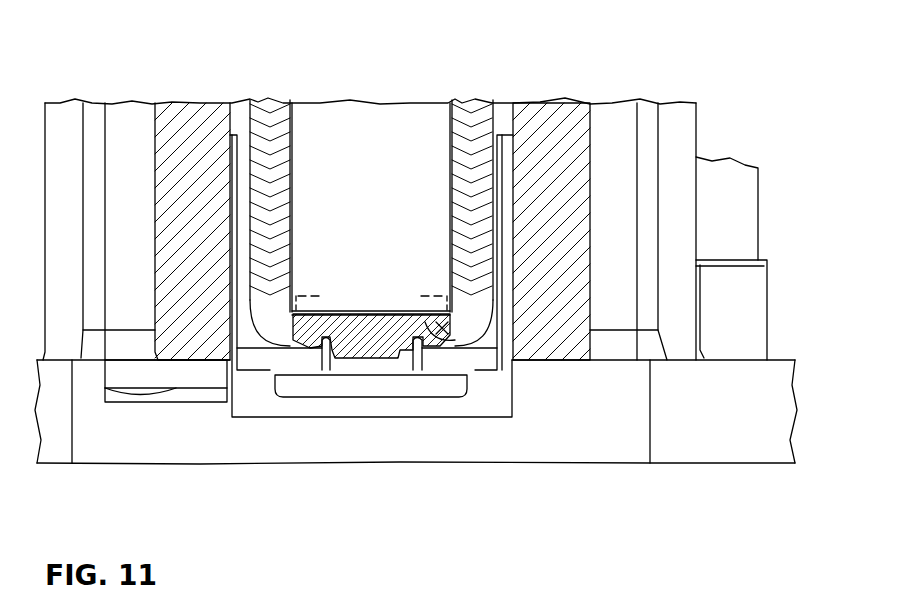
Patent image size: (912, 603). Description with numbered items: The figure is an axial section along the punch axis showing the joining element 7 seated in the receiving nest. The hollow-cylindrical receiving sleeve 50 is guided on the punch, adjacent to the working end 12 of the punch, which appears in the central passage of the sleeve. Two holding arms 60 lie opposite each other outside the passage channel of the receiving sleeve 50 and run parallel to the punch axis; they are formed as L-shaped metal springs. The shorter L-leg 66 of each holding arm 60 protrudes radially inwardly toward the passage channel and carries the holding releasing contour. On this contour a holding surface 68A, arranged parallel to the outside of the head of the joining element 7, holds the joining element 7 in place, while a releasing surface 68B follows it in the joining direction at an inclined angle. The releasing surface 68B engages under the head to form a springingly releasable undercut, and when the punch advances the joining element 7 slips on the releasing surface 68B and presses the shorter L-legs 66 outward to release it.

The joining element 7 is at (369, 357).
The working end 12 is at (383, 133).
The receiving sleeve 50 is at (278, 122).
The holding arms 60 is at (484, 122).
The shorter L-leg 66 is at (275, 335).
The holding surface 68A is at (448, 333).
The releasing surface 68B is at (400, 352).